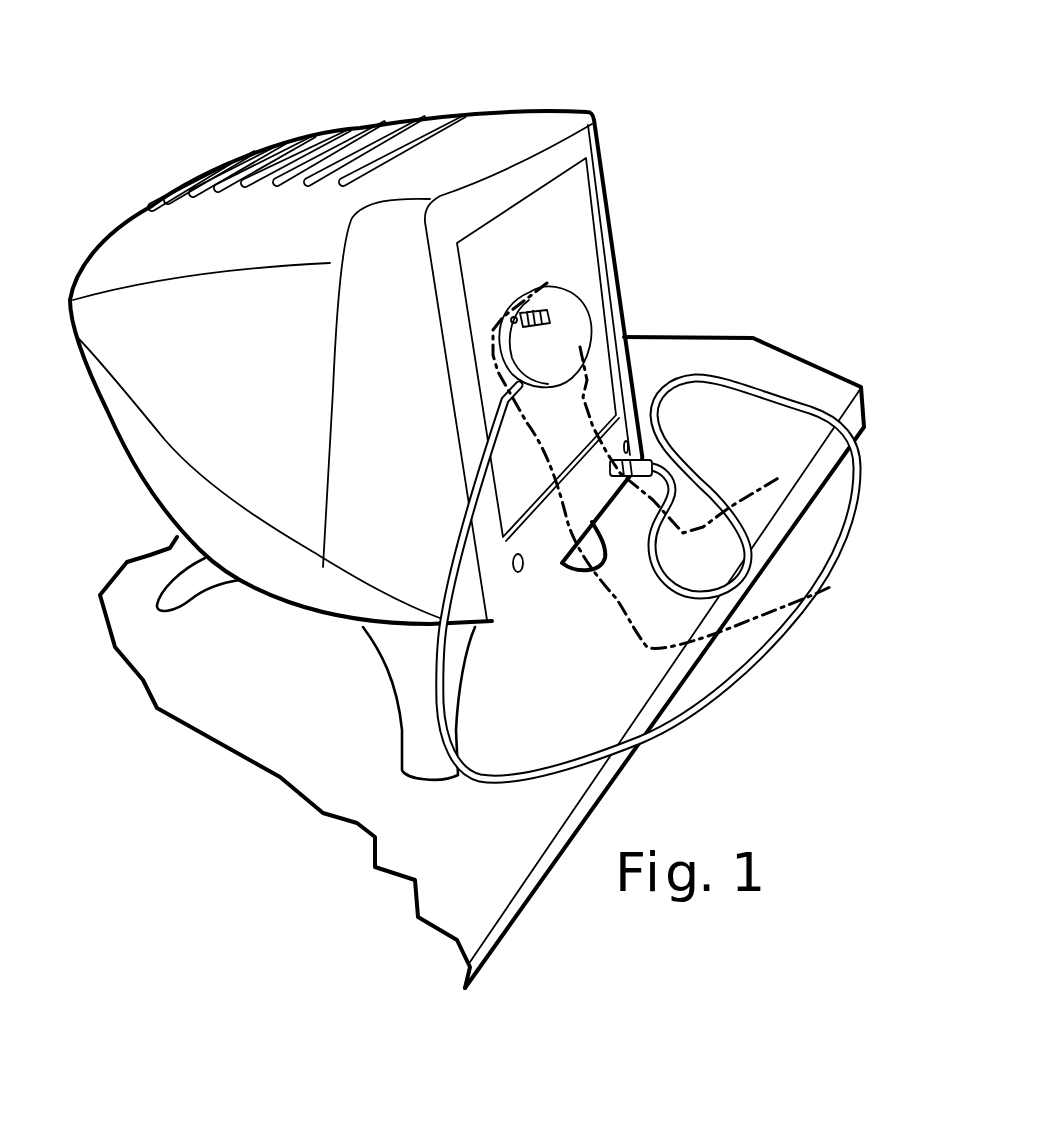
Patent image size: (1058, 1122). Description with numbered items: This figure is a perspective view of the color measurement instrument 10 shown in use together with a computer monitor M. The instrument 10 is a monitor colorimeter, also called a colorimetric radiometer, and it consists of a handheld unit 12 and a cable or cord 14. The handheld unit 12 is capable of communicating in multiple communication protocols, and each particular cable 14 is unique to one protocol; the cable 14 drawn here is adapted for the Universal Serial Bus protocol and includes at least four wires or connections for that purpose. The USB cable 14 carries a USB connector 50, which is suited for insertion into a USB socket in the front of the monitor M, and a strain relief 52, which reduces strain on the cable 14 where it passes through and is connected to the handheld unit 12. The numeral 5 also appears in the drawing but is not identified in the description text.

The monitor M is at (590, 108).
The color measurement instrument 10 is at (560, 260).
The handheld unit 12 is at (572, 316).
The desk 5 is at (656, 380).
The USB connector 50 is at (617, 488).
The strain relief 52 is at (493, 370).
The cable 14 is at (700, 688).